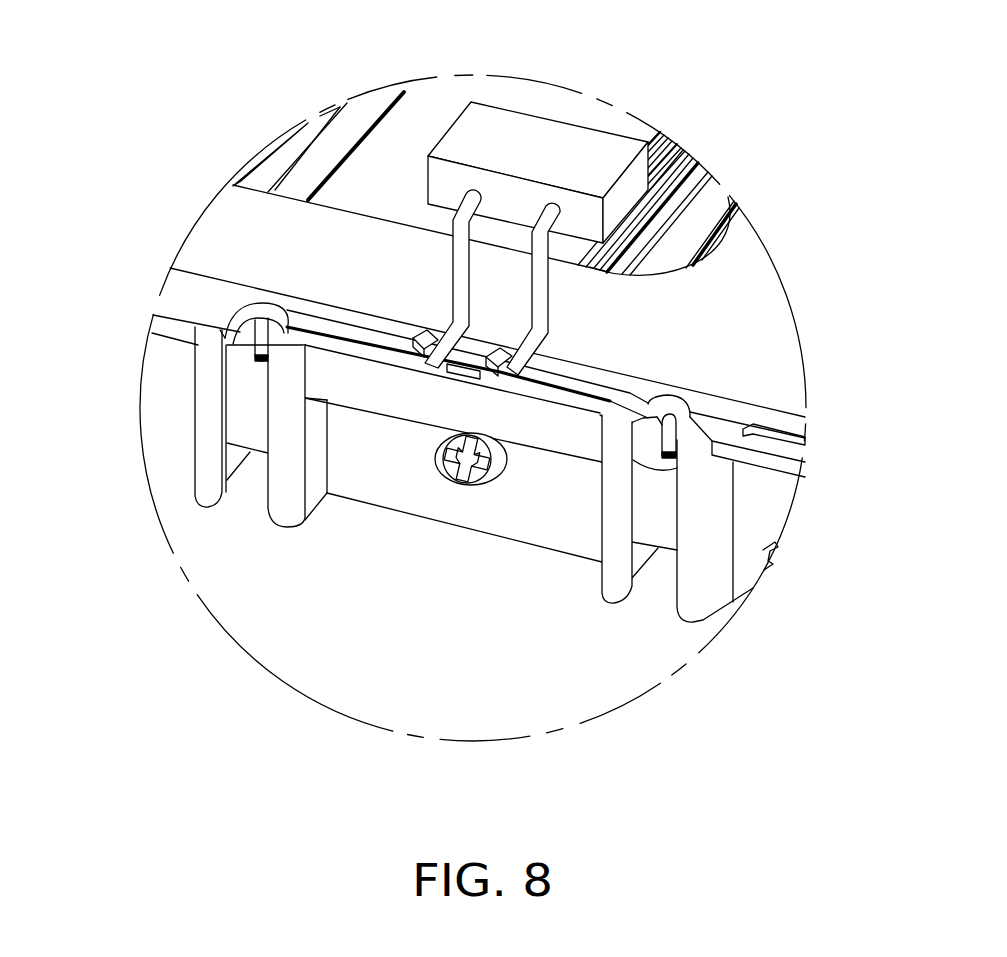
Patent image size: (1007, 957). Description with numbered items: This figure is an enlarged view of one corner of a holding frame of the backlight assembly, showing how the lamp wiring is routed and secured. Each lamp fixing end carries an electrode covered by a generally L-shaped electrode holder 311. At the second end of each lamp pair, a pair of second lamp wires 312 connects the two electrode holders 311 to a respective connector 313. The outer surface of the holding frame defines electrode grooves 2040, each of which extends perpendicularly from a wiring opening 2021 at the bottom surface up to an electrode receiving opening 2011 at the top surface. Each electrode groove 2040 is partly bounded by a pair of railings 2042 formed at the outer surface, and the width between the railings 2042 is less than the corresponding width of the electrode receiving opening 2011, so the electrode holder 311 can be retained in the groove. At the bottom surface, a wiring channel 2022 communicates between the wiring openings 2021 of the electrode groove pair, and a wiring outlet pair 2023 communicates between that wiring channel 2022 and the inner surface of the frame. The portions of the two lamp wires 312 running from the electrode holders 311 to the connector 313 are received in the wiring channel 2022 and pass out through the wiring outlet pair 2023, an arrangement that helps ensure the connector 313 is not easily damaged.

The electrode receiving opening 2011 is at (247, 483).
The wiring opening 2021 is at (250, 330).
The wiring channel 2022 is at (335, 335).
The wiring outlet pair 2023 is at (498, 355).
The electrode groove 2040 is at (250, 452).
The railing 2042 is at (613, 573).
The electrode holder 311 is at (665, 508).
The lamp wire 312 is at (537, 308).
The connector 313 is at (513, 135).